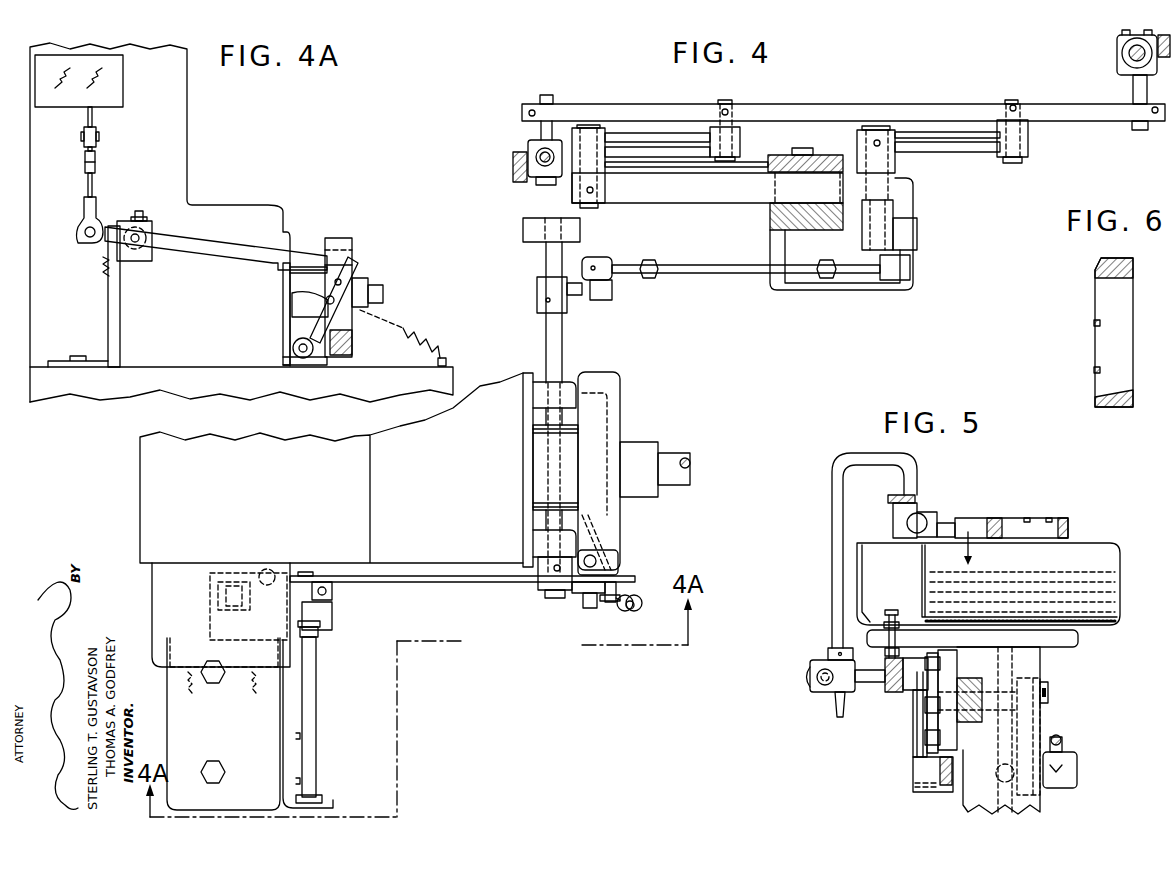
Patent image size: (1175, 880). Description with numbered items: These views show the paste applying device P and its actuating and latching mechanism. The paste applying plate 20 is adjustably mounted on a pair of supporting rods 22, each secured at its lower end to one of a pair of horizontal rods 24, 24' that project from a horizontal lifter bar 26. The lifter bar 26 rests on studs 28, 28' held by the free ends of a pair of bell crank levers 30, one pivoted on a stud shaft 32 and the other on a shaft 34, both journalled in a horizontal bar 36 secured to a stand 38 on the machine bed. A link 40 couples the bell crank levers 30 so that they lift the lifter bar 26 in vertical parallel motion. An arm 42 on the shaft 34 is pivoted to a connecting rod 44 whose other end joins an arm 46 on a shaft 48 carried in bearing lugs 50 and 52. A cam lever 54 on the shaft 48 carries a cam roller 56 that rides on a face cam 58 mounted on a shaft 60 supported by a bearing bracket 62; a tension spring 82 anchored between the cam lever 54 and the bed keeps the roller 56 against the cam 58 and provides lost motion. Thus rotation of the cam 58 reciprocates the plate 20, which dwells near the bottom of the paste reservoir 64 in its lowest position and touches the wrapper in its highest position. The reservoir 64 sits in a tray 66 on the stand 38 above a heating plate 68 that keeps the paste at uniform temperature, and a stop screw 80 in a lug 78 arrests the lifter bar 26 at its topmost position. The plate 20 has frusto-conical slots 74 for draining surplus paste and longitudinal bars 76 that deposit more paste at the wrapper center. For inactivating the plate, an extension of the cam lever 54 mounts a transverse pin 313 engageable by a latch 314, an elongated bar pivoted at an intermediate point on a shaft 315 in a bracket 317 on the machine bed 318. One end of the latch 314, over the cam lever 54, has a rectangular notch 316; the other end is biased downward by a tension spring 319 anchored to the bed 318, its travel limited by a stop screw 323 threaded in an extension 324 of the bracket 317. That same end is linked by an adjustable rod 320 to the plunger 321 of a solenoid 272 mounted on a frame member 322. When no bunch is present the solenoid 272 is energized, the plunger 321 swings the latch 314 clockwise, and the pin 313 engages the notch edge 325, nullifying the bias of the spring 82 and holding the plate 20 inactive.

In FIG. 6, the paste applying plate 20 is at (1135, 262).
In FIG. 5, the paste applying plate 20 is at (1069, 525).
In FIG. 4, the supporting rods 22 is at (1118, 55).
In FIG. 5, the supporting rods 22 is at (842, 456).
In FIG. 4, the horizontal rods 24 is at (1121, 118).
In FIG. 5, the horizontal rods 24 is at (870, 694).
In FIG. 4, the rod 24' is at (557, 129).
In FIG. 4, the lifter bar 26 is at (953, 104).
In FIG. 5, the lifter bar 26 is at (897, 692).
In FIG. 4, the studs 28 is at (1023, 144).
In FIG. 4, the block 28' is at (742, 117).
In FIG. 4, the bell crank levers 30 is at (663, 138).
In FIG. 5, the bell crank levers 30 is at (920, 742).
In FIG. 4, the stud shaft 32 is at (598, 128).
In FIG. 4, the shaft 34 is at (873, 130).
In FIG. 5, the shaft 34 is at (1048, 695).
In FIG. 4, the horizontal bar 36 is at (672, 195).
In FIG. 5, the horizontal bar 36 is at (984, 684).
In FIG. 4, the bracket or stand 38 is at (795, 243).
In FIG. 5, the bracket or stand 38 is at (970, 802).
In FIG. 4, the link 40 is at (756, 160).
In FIG. 5, the link 40 is at (943, 793).
In FIG. 4, the arm 42 is at (917, 236).
In FIG. 5, the arm 42 is at (1040, 723).
In FIG. 4, the connecting rod 44 is at (912, 273).
In FIG. 5, the connecting rod 44 is at (1063, 742).
In FIG. 4, the arm 46 is at (612, 294).
In FIG. 4, the shaft 48 is at (565, 340).
In FIG. 4, the bearing lug 50 is at (581, 229).
In FIG. 4, the bearing lug 52 is at (544, 386).
In FIG. 4A, the cam lever 54 is at (323, 328).
In FIG. 4, the cam lever 54 is at (580, 594).
In FIG. 4A, the cam roller 56 is at (310, 295).
In FIG. 4, the cam roller 56 is at (592, 562).
In FIG. 4A, the face cam 58 is at (352, 343).
In FIG. 4, the face cam 58 is at (615, 520).
In FIG. 4, the shaft 60 is at (677, 457).
In FIG. 4, the bearing bracket 62 is at (524, 473).
In FIG. 5, the paste reservoir 64 is at (1122, 563).
In FIG. 5, the tray 66 is at (1123, 623).
In FIG. 5, the heating plate 68 is at (1098, 632).
In FIG. 6, the frusto-conical slots 74 is at (1113, 280).
In FIG. 5, the frusto-conical slots 74 is at (1002, 519).
In FIG. 6, the longitudinal bars 76 is at (1094, 324).
In FIG. 5, the longitudinal bars 76 is at (1049, 518).
In FIG. 5, the lug 78 is at (870, 637).
In FIG. 5, the stop screw 80 is at (891, 610).
In FIG. 4A, the tension spring 82 is at (402, 331).
In FIG. 4, the tension spring 82 is at (642, 593).
In FIG. 5, the paste applying device P is at (1116, 526).
In FIG. 4A, the solenoid 272 is at (123, 88).
In FIG. 4, the solenoid 272 is at (227, 604).
In FIG. 4A, the transverse pin 313 is at (355, 262).
In FIG. 4, the transverse pin 313 is at (610, 602).
In FIG. 4A, the latch 314 is at (234, 245).
In FIG. 4, the latch 314 is at (438, 578).
In FIG. 4A, the shaft 315 is at (135, 251).
In FIG. 4, the shaft 315 is at (310, 572).
In FIG. 4A, the notch 316 is at (275, 267).
In FIG. 4A, the bracket 317 is at (108, 316).
In FIG. 4, the bracket 317 is at (268, 723).
In FIG. 4A, the machine bed 318 is at (155, 371).
In FIG. 4A, the tension spring 319 is at (103, 268).
In FIG. 4, the tension spring 319 is at (268, 586).
In FIG. 4A, the adjustable rod 320 is at (96, 183).
In FIG. 4A, the plunger 321 is at (97, 117).
In FIG. 4, the plunger 321 is at (225, 612).
In FIG. 4A, the frame member 322 is at (187, 91).
In FIG. 4, the frame member 322 is at (196, 563).
In FIG. 4A, the stop screw 323 is at (140, 211).
In FIG. 4, the stop screw 323 is at (332, 590).
In FIG. 4A, the extension 324 is at (152, 221).
In FIG. 4, the extension 324 is at (333, 604).
In FIG. 4A, the notch edge 325 is at (325, 275).